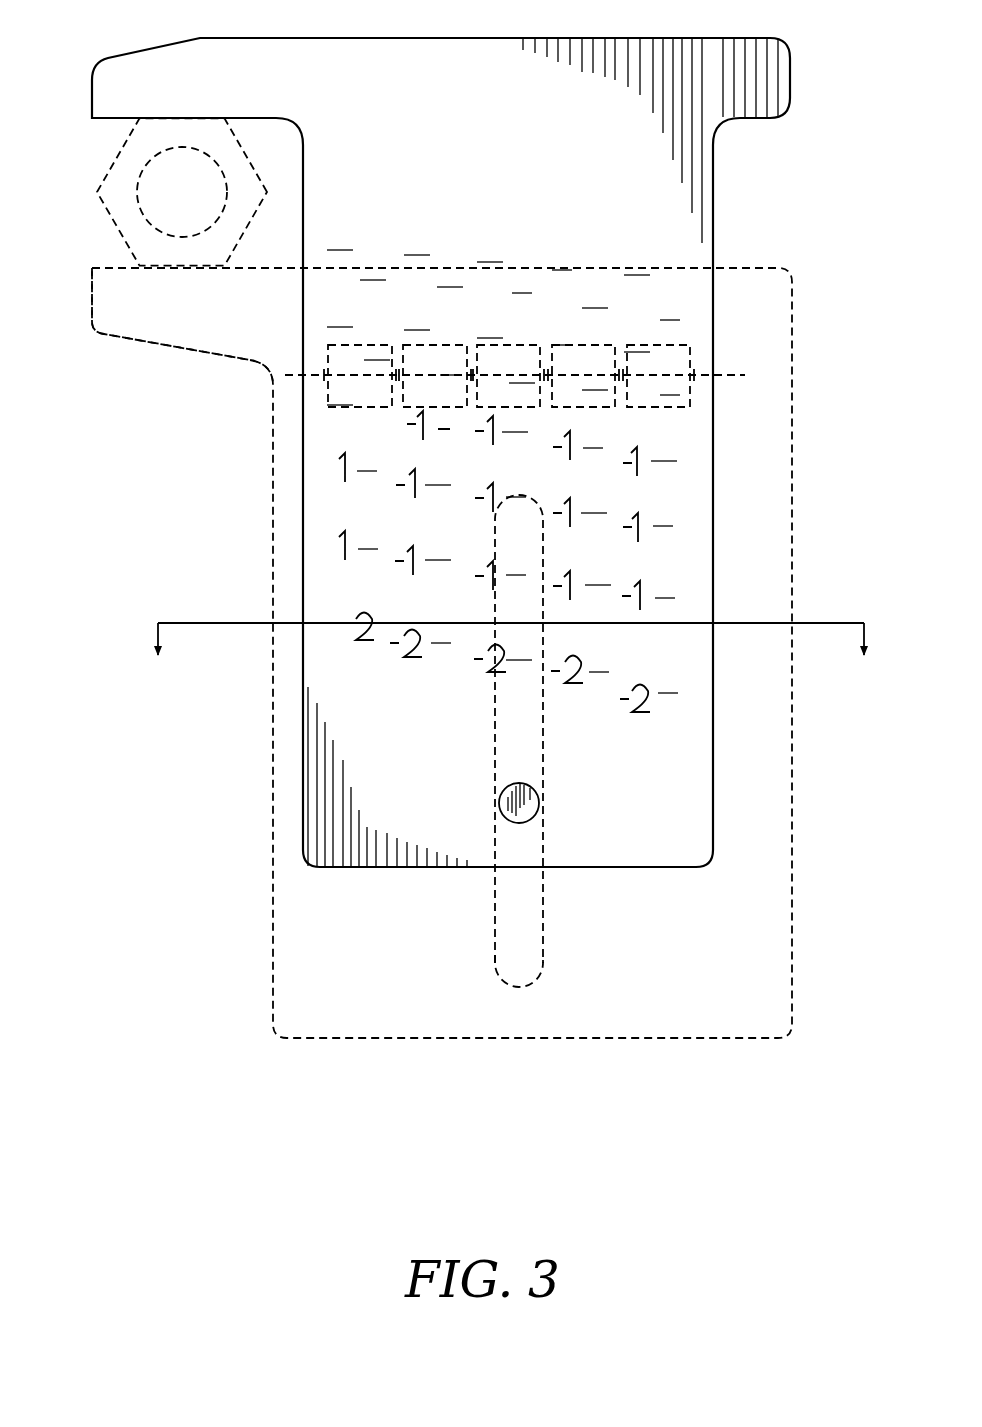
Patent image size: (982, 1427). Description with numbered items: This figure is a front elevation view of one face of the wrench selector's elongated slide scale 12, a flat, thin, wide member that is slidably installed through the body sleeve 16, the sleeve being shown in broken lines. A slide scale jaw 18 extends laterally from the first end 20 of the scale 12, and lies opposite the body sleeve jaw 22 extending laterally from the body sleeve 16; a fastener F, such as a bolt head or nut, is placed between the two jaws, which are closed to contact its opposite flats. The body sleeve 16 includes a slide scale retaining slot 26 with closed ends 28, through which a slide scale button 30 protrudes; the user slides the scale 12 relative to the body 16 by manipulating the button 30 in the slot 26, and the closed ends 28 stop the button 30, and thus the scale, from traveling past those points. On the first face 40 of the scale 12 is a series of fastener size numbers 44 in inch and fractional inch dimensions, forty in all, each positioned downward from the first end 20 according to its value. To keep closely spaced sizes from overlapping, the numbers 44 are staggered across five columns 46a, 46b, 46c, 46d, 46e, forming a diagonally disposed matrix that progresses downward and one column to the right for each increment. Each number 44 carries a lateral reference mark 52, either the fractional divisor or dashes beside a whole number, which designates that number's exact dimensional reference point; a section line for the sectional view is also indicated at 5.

The slide scale 12 is at (302, 748).
The body sleeve 16 is at (270, 940).
The slide scale jaw 18 is at (128, 56).
The first end 20 is at (491, 38).
The body sleeve jaw 22 is at (185, 355).
The slide scale retaining slot 26 is at (525, 932).
The closed ends 28 is at (497, 977).
The slide scale button 30 is at (540, 803).
The first face 40 is at (335, 673).
The fastener size numbers 44 is at (328, 472).
The column 46a is at (356, 252).
The column 46b is at (431, 240).
The column 46c is at (501, 254).
The column 46d is at (574, 240).
The column 46e is at (636, 250).
The lateral reference mark 52 is at (412, 440).
The section line 5- 5 is at (511, 662).
The fastener F is at (100, 208).